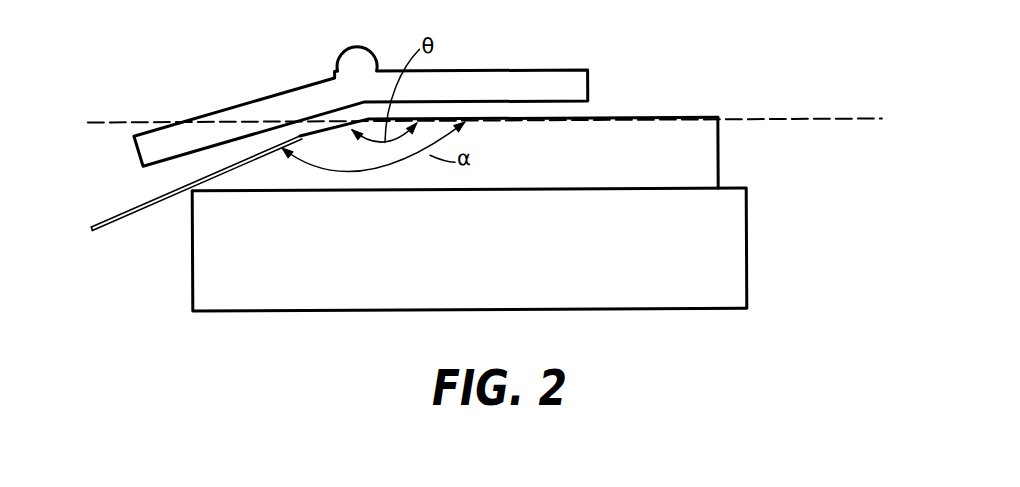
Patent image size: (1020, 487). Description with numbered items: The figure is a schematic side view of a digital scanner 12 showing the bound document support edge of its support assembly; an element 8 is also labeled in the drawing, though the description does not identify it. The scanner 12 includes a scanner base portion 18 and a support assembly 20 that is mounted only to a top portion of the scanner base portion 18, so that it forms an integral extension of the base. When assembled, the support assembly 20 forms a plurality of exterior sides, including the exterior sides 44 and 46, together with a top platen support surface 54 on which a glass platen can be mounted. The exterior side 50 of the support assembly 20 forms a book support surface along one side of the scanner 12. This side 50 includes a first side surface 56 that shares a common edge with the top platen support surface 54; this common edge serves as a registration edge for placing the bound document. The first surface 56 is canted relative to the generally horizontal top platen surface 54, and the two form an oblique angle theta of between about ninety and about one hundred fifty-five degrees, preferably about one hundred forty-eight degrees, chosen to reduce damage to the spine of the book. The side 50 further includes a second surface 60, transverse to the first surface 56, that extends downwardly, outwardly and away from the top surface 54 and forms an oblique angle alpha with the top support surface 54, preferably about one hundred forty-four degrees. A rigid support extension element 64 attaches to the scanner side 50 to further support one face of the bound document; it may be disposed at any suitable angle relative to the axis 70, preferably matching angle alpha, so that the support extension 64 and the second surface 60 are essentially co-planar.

The digital scanner 12 is at (778, 62).
The arm 8 is at (517, 70).
The axis 70 is at (117, 121).
The first side surface 56 is at (310, 126).
The support assembly 20 is at (720, 142).
The scanner base portion 18 is at (747, 241).
The top platen support surface 54 is at (673, 117).
The exterior side 46 is at (720, 163).
The exterior side 44 is at (522, 173).
The rigid support extension element 64 is at (117, 218).
The second surface 60 is at (252, 158).
The exterior side 50 is at (145, 173).